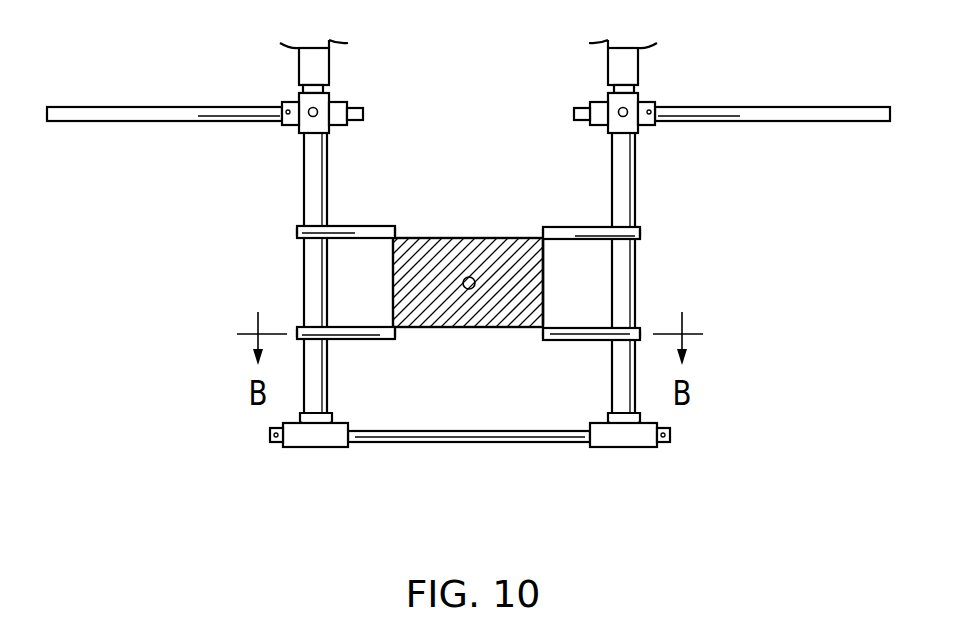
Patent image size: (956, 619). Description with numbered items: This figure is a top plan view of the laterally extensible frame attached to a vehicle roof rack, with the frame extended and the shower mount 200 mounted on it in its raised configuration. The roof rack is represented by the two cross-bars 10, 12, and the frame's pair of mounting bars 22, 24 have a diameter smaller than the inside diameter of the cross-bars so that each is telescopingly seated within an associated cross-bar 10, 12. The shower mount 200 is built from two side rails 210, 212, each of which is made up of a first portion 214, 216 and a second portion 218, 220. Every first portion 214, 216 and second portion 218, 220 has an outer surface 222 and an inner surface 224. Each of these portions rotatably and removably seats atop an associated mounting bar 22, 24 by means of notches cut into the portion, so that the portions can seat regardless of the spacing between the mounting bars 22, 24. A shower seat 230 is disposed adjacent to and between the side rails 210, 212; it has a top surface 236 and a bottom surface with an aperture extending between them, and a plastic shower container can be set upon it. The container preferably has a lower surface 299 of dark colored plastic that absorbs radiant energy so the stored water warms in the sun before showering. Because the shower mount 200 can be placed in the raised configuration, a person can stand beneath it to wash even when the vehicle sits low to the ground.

The cross-bar 10 is at (298, 70).
The cross-bar 12 is at (642, 70).
The mounting bar 22 is at (296, 187).
The mounting bar 24 is at (647, 181).
The shower mount 200 is at (540, 343).
The side rail 210 is at (383, 174).
The side rail 212 is at (346, 424).
The first portion 214 is at (360, 224).
The first portion 216 is at (351, 341).
The second portion 218 is at (573, 226).
The second portion 220 is at (573, 341).
The outer surface 222 is at (342, 224).
The inner surface 224 is at (347, 326).
The shower seat 230 is at (454, 313).
The top surface 236 is at (518, 307).
The lower surface 299 is at (547, 277).